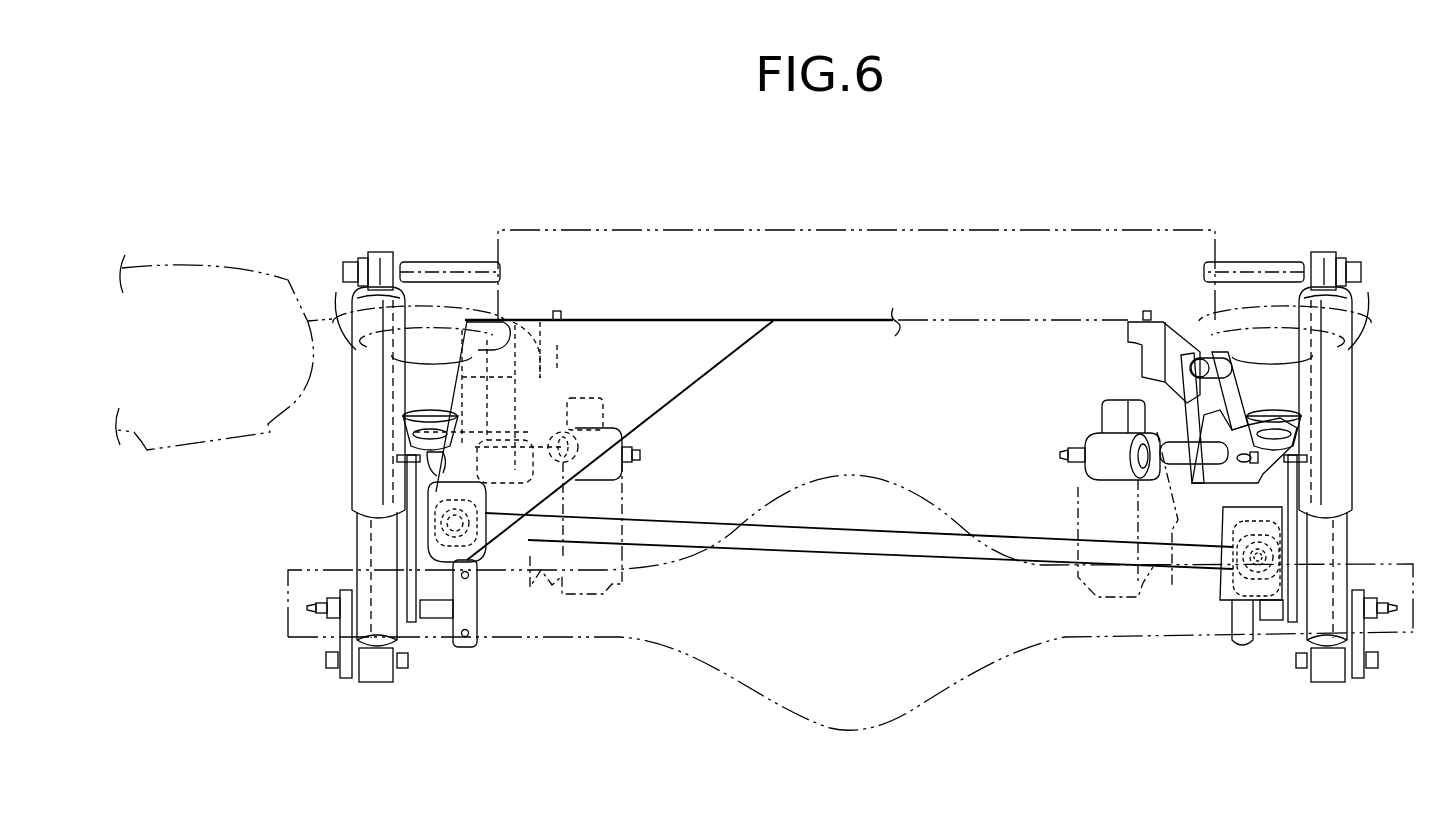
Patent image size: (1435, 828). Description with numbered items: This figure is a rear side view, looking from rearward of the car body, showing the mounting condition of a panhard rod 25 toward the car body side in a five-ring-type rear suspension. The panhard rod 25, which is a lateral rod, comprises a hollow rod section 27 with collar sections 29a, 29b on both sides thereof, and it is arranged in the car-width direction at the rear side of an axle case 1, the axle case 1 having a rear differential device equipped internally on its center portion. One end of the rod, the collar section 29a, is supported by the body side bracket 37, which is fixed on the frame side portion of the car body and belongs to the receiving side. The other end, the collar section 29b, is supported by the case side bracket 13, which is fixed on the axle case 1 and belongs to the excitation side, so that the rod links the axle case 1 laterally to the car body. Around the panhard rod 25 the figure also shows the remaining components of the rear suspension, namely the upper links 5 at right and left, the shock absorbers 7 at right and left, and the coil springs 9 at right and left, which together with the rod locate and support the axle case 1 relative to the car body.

The axle case 1 is at (693, 652).
The upper links 5 is at (533, 500).
The shock absorbers 7 is at (352, 352).
The coil springs 9 is at (424, 305).
The case side bracket 13 is at (1220, 590).
The panhard rod 25 is at (885, 556).
The hollow rod section 27 is at (802, 553).
The collar section 29a is at (448, 563).
The collar section 29b is at (1262, 577).
The body side bracket 37 is at (695, 382).